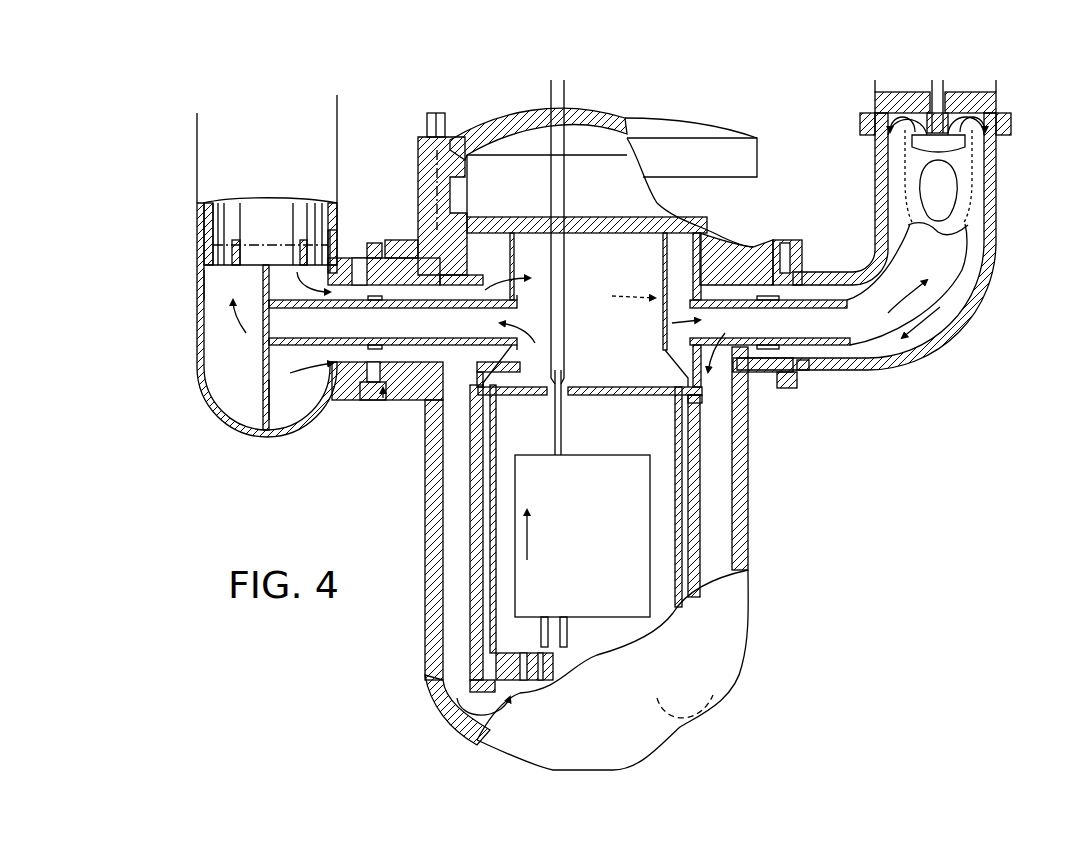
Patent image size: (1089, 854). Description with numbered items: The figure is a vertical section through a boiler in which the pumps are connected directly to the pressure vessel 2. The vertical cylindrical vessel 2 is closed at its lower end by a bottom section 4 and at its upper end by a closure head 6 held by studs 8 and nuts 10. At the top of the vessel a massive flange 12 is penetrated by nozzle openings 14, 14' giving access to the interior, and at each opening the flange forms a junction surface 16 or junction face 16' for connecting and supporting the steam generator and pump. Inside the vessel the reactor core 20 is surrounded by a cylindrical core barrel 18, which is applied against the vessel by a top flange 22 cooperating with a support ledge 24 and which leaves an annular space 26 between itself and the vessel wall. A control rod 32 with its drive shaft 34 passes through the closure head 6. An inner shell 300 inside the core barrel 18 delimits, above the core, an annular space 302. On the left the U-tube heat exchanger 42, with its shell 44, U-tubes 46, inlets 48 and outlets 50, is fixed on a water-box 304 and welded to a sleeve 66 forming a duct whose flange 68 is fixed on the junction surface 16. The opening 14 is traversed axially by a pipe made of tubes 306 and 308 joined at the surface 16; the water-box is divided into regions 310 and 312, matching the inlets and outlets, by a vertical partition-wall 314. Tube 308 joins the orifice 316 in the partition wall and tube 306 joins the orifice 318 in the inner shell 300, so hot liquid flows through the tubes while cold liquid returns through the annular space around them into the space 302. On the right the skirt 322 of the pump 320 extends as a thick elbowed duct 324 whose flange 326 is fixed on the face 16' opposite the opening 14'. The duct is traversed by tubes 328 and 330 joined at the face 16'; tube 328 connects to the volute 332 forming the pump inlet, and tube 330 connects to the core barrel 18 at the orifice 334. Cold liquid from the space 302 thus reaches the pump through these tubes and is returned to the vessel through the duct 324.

The pressure vessel 2 is at (748, 528).
The bottom section 4 is at (445, 712).
The closure head 6 is at (660, 124).
The studs 8 is at (440, 195).
The nuts 10 is at (428, 122).
The massive flange 12 is at (440, 262).
The nozzle opening 14 is at (426, 412).
The nozzle opening 14' is at (799, 239).
The junction surface 16 is at (360, 447).
The junction face 16' is at (771, 400).
The core barrel 18 is at (472, 503).
The reactor core 20 is at (624, 543).
The top flange 22 is at (465, 222).
The support ledge 24 is at (547, 186).
The annular space 26 is at (456, 560).
The control rod 32 is at (565, 440).
The drive shaft 34 is at (555, 200).
The heat exchanger 42 is at (180, 199).
The heat-exchanger shell 44 is at (204, 203).
The U-tubes 46 is at (213, 225).
The inlets 48 is at (204, 275).
The outlets 50 is at (297, 270).
The sleeve 66 is at (350, 393).
The flange 68 is at (378, 400).
The inner shell 300 is at (668, 278).
The annular space 302 is at (668, 252).
The water-box 304 is at (205, 395).
The tube 306 is at (436, 339).
The tube 308 is at (309, 367).
The region 310 is at (225, 348).
The region 312 is at (285, 415).
The vertical partition-wall 314 is at (263, 365).
The orifice 316 is at (265, 325).
The orifice 318 is at (548, 322).
The pump 320 is at (872, 103).
The skirt 322 is at (1000, 208).
The elbowed duct 324 is at (897, 350).
The flange 326 is at (808, 373).
The tube 328 is at (935, 285).
The tube 330 is at (680, 398).
The volute 332 is at (977, 181).
The orifice 334 is at (660, 355).